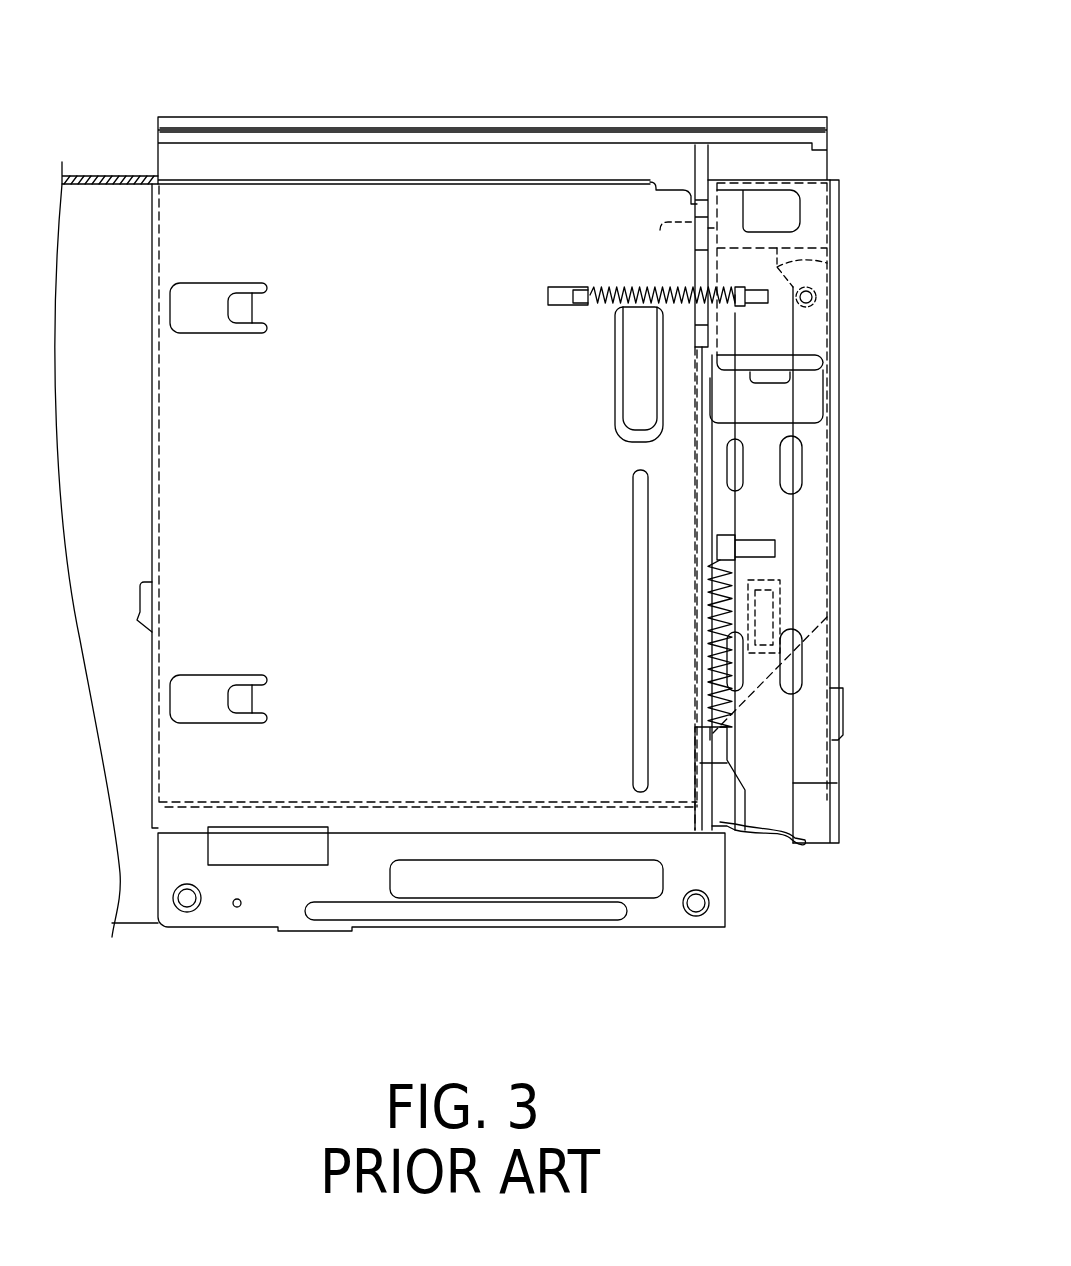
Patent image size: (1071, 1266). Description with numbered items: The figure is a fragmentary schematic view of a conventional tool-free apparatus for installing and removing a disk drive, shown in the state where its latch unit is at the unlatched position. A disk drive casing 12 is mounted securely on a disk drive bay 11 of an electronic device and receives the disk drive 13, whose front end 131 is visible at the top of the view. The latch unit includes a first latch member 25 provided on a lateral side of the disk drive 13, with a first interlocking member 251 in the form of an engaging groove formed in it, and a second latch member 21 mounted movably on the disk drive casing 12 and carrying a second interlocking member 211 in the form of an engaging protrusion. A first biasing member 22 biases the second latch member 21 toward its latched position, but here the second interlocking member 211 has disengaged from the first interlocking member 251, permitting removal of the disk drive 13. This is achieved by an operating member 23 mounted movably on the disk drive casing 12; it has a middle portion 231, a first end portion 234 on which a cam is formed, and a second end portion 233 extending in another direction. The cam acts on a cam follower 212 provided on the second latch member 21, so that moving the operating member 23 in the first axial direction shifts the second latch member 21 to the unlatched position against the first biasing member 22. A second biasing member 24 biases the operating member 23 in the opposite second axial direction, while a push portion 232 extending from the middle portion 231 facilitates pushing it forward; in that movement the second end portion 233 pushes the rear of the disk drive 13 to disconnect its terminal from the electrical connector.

The disk drive bay 11 is at (90, 174).
The disk drive casing 12 is at (822, 652).
The disk drive 13 is at (200, 116).
The front end 131 is at (270, 116).
The second latch member 21 is at (818, 333).
The second interlocking member 211 is at (673, 226).
The cam follower 212 is at (818, 297).
The first biasing member 22 is at (608, 289).
The operating member 23 is at (793, 523).
The middle portion 231 is at (778, 566).
The push portion 232 is at (792, 850).
The second end portion 233 is at (680, 820).
The first end portion 234 is at (832, 262).
The second biasing member 24 is at (707, 666).
The first latch member 25 is at (702, 150).
The first interlocking member 251 is at (698, 203).